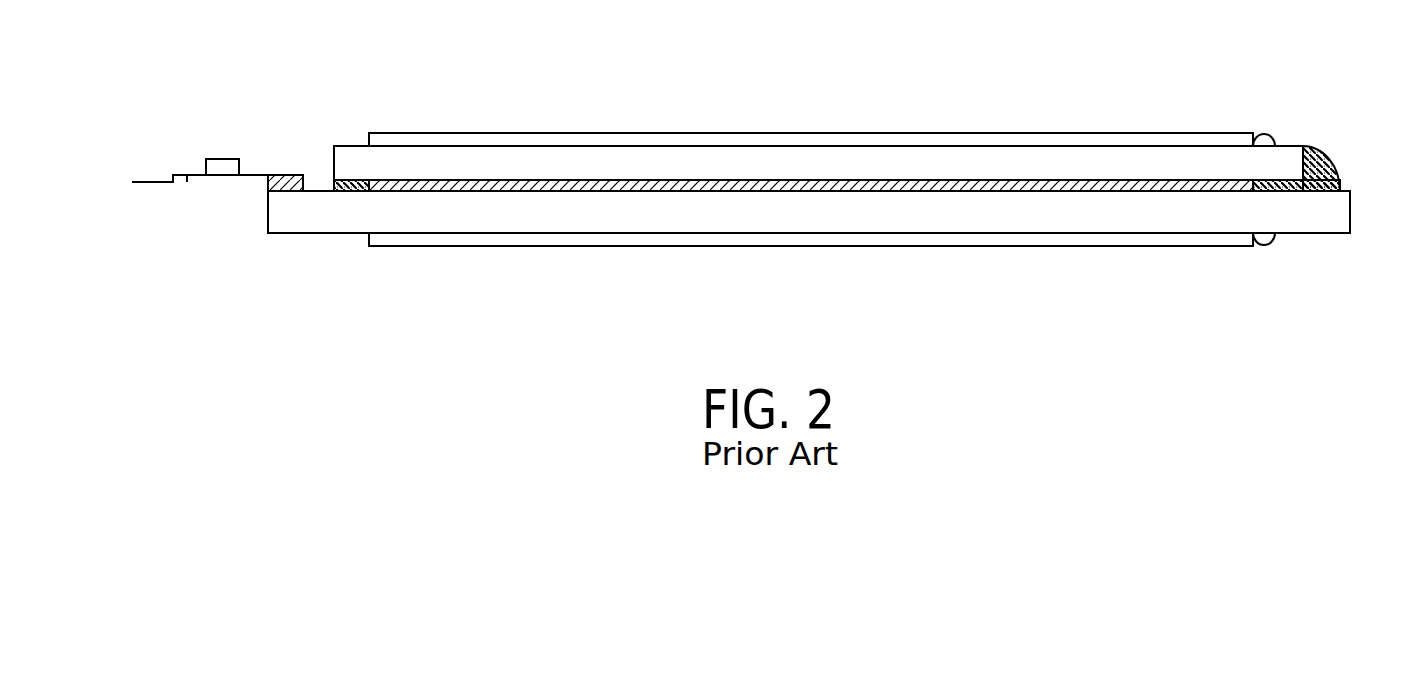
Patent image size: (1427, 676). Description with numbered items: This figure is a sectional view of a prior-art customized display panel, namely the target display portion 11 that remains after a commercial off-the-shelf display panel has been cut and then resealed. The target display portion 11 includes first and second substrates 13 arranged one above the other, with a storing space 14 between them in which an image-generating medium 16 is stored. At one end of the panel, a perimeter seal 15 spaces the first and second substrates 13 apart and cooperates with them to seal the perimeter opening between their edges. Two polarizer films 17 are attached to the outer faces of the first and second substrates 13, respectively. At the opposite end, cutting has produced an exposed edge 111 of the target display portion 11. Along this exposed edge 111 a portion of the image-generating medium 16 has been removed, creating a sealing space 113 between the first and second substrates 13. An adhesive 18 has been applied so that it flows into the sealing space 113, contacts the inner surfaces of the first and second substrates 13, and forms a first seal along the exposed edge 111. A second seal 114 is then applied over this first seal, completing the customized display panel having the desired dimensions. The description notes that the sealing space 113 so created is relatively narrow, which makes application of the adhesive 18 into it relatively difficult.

The target display portion 11 is at (838, 114).
The first and second substrates 13 is at (590, 166).
The storing space 14 is at (517, 192).
The perimeter seal 15 is at (349, 192).
The image-generating medium 16 is at (720, 185).
The polarizer films 17 is at (735, 142).
The adhesive 18 is at (1261, 192).
The exposed edge 111 is at (1295, 166).
The sealing space 113 is at (1285, 190).
The second seal 114 is at (1327, 168).